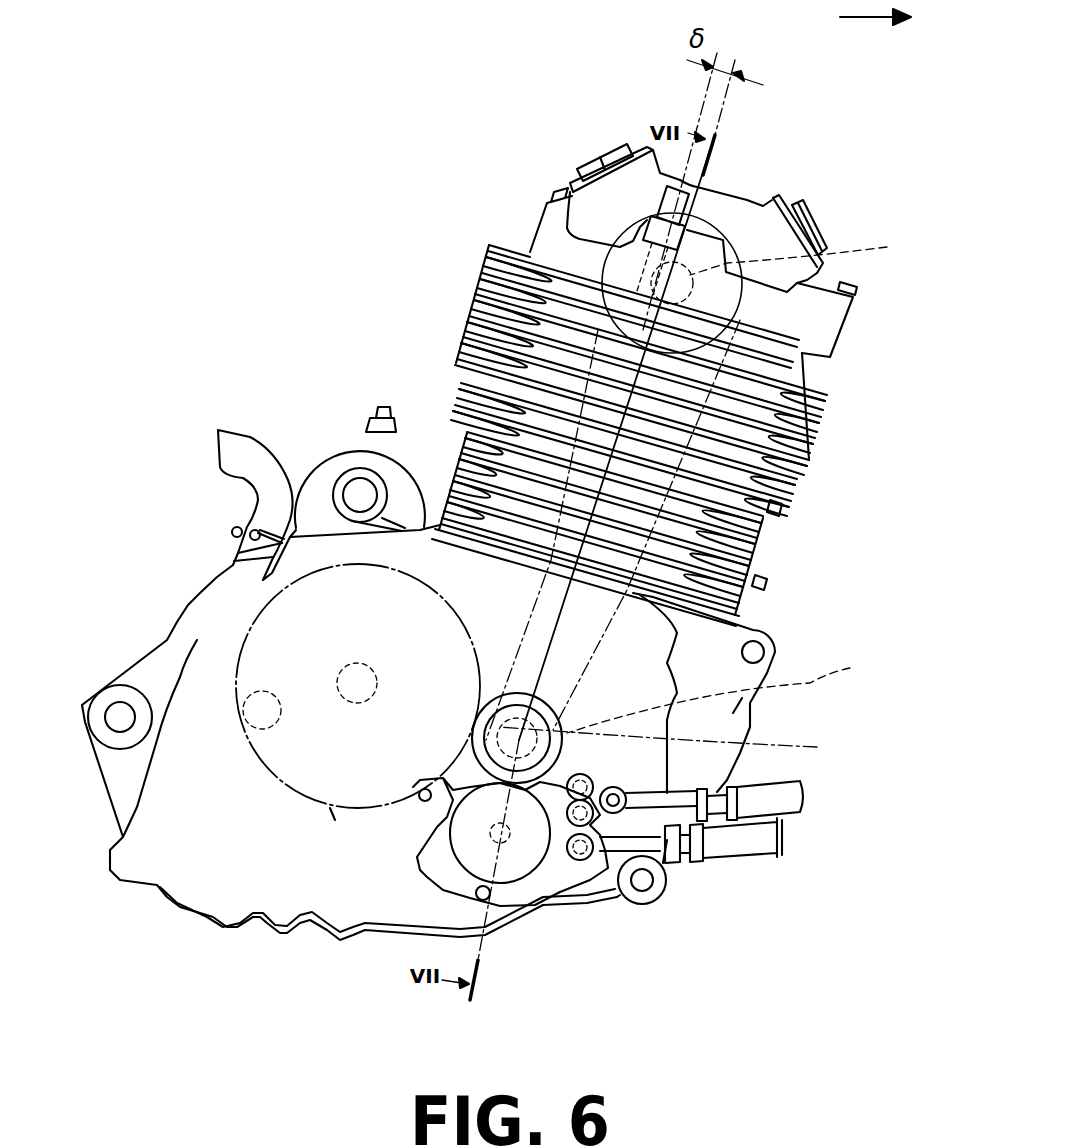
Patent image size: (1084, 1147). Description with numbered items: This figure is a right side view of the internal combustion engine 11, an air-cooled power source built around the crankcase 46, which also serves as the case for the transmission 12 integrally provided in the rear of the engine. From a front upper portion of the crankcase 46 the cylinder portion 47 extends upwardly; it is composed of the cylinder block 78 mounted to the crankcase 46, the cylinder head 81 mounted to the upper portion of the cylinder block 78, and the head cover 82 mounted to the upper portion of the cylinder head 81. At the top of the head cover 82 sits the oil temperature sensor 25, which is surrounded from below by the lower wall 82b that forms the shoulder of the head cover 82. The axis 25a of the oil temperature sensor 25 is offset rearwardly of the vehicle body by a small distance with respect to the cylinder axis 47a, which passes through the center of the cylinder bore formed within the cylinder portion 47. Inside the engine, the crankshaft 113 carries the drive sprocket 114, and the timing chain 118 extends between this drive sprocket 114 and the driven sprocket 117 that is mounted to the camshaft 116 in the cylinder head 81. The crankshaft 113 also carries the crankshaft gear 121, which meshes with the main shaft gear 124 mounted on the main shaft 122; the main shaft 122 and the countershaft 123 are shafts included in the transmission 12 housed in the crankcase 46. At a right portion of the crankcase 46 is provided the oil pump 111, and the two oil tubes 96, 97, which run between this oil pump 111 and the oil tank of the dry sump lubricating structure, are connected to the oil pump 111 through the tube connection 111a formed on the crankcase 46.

The axis of the oil temperature sensor 25a is at (703, 103).
The cylinder axis 47a is at (745, 108).
The oil temperature sensor 25 is at (640, 228).
The head cover 82 is at (740, 195).
The cylinder portion 47 is at (475, 290).
The driven sprocket 117 is at (733, 248).
The camshaft 116 is at (811, 255).
The lower wall 82b is at (835, 318).
The cylinder head 81 is at (790, 405).
The cylinder block 78 is at (745, 530).
The timing chain 118 is at (700, 610).
The transmission 12 is at (172, 630).
The internal combustion engine 11 is at (785, 663).
The crankshaft 113 is at (732, 693).
The crankcase 46 is at (733, 720).
The drive sprocket 114 is at (667, 738).
The oil tube 97 is at (770, 798).
The oil tube 96 is at (750, 845).
The countershaft 123 is at (262, 729).
The main shaft 122 is at (343, 700).
The main shaft gear 124 is at (331, 809).
The crankshaft gear 121 is at (432, 823).
The oil pump 111 is at (535, 905).
The tube connection 111a is at (582, 862).